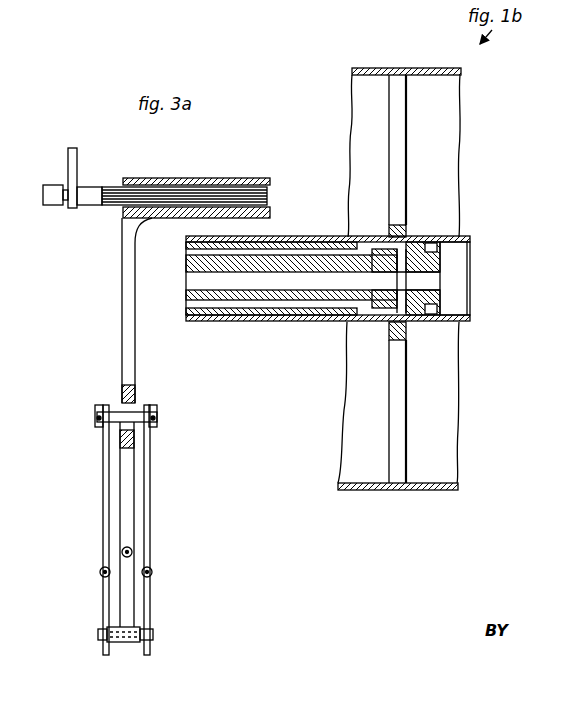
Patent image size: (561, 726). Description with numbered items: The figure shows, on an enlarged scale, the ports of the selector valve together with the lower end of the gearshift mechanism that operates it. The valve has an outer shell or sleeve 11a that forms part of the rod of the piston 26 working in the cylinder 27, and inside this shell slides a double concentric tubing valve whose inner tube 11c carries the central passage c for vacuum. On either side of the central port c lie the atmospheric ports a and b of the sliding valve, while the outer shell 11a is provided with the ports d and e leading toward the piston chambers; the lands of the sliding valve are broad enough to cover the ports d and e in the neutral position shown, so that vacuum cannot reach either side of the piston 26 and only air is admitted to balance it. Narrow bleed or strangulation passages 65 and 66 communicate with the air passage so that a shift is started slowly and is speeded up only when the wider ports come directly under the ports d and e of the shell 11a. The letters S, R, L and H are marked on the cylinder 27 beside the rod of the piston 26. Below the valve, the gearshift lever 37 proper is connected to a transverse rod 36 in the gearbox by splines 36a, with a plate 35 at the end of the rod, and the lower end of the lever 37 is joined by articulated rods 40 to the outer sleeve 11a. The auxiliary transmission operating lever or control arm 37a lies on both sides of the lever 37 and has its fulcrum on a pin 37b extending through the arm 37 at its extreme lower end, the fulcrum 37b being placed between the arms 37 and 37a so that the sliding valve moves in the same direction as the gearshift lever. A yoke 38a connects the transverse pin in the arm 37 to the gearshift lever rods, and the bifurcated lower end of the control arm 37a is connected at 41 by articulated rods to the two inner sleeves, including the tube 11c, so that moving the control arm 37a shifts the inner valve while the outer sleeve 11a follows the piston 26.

In FIG. 1B, the cylinder 27 is at (422, 70).
In FIG. 1B, the piston 26 is at (398, 123).
In FIG. 1B, the supply side S is at (370, 97).
In FIG. 1B, the return side R is at (380, 92).
In FIG. 1B, the low pressure side L is at (429, 88).
In FIG. 1B, the high pressure side H is at (440, 84).
In FIG. 1B, the bleed passage 65 is at (361, 236).
In FIG. 1B, the bleed passage 66 is at (436, 236).
In FIG. 1B, the outer sleeve 11a is at (470, 238).
In FIG. 1B, the inner sliding valve tube 11c is at (470, 279).
In FIG. 1B, the central vacuum port c is at (414, 281).
In FIG. 1B, the atmospheric port a is at (356, 322).
In FIG. 1B, the atmospheric port b is at (444, 322).
In FIG. 1B, the shell port d is at (383, 322).
In FIG. 1B, the shell port e is at (409, 322).
In FIG. 3A, the end plate 35 is at (68, 161).
In FIG. 3A, the transverse rod 36 is at (88, 190).
In FIG. 3A, the splines 36a is at (210, 182).
In FIG. 3A, the gearshift lever 37 is at (166, 186).
In FIG. 3A, the auxiliary transmission operating lever 37a is at (150, 448).
In FIG. 3A, the fulcrum pin 37b is at (121, 645).
In FIG. 3A, the yoke 38a is at (157, 412).
In FIG. 3A, the articulated rods 40 is at (132, 552).
In FIG. 3A, the articulated rod connection 41 is at (152, 572).